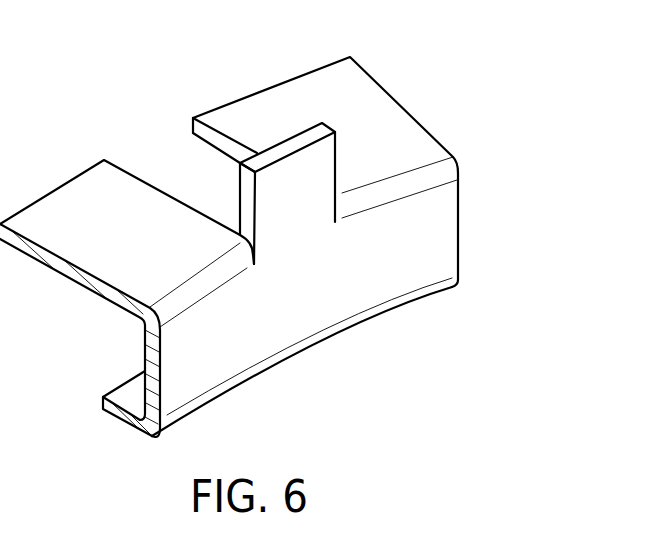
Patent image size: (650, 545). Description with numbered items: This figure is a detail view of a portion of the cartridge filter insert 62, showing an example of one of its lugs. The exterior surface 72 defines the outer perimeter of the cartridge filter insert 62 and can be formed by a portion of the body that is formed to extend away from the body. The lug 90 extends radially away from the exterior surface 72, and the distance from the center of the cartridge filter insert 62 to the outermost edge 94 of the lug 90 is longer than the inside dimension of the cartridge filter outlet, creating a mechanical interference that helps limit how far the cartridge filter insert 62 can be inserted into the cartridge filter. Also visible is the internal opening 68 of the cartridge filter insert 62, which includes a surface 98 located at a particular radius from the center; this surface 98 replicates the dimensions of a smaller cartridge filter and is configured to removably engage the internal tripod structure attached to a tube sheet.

The cartridge filter insert 62 is at (488, 198).
The internal opening 68 is at (137, 478).
The exterior surface 72 is at (372, 107).
The lug 90 is at (239, 205).
The outermost edge 94 is at (305, 142).
The surface 98 is at (115, 420).